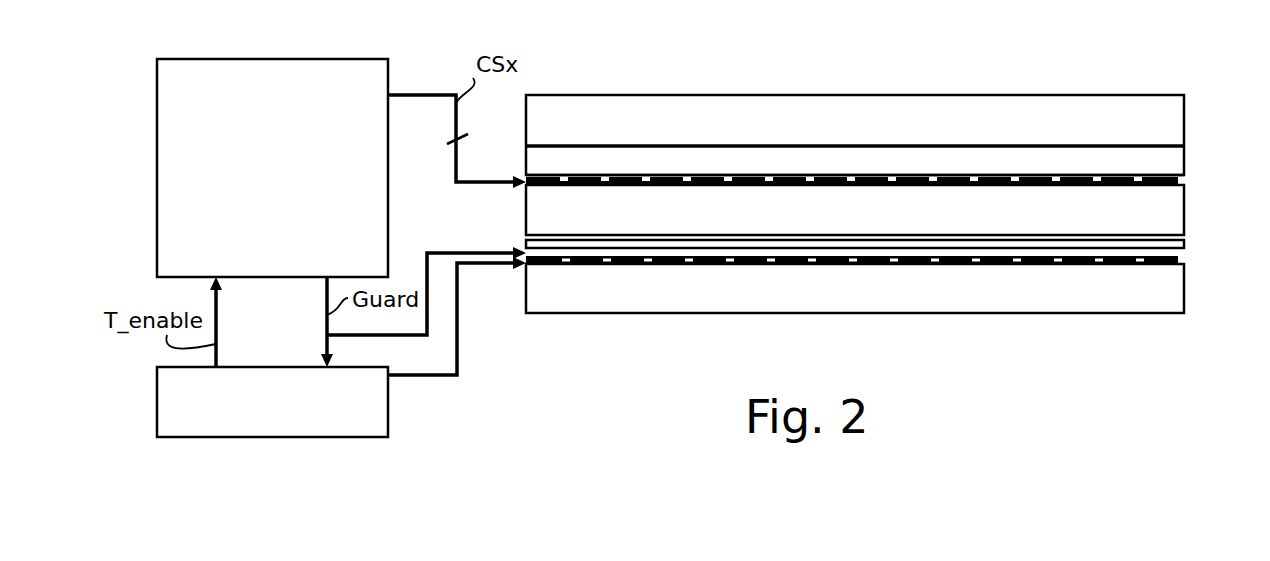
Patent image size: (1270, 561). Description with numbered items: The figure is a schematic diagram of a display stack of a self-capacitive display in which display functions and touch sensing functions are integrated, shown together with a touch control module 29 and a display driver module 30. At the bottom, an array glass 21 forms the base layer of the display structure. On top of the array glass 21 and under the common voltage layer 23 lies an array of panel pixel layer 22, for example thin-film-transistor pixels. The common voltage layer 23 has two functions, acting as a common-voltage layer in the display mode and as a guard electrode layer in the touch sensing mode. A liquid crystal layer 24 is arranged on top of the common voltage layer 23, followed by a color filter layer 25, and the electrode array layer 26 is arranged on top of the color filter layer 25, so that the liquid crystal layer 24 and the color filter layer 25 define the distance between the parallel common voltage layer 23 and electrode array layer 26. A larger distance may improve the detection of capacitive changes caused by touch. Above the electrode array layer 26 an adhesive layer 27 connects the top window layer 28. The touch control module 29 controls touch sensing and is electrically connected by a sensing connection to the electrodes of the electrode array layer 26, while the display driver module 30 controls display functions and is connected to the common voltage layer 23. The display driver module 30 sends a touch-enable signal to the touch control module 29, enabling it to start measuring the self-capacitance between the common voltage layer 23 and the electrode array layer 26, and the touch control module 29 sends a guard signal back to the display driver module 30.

The array glass 21 is at (1184, 303).
The panel pixel layer 22 is at (1182, 262).
The common voltage layer 23 is at (1178, 258).
The liquid crystal layer 24 is at (1184, 243).
The color filter layer 25 is at (1184, 202).
The electrode array layer 26 is at (1178, 181).
The adhesive layer 27 is at (1184, 153).
The window layer 28 is at (1184, 108).
The touch control module 29 is at (258, 170).
The display driver module 30 is at (255, 417).